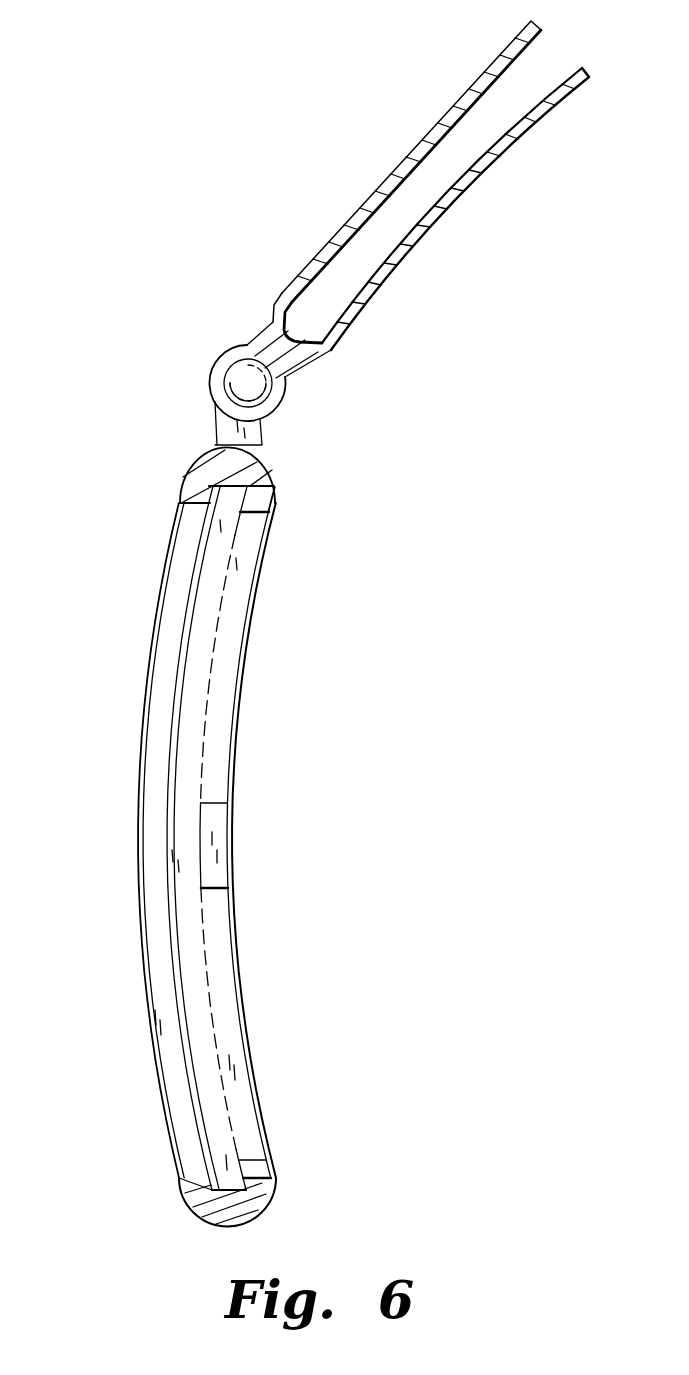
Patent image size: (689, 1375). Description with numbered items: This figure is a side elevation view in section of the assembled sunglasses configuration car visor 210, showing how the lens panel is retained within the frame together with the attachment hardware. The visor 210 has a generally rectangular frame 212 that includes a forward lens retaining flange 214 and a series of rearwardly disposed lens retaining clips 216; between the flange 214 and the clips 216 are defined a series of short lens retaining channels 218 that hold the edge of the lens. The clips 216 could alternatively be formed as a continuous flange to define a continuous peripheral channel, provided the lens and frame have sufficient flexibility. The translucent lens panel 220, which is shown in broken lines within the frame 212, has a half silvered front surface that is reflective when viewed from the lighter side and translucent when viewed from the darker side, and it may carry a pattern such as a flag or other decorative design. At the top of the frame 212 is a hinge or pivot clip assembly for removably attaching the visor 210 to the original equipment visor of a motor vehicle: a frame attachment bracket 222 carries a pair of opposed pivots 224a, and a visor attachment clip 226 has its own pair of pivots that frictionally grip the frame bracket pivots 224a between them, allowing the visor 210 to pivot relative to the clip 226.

The visor 210 is at (544, 963).
The frame 212 is at (185, 1198).
The forward lens retaining flange 214 is at (172, 1085).
The lens retaining clips 216 is at (272, 512).
The lens retaining channels 218 is at (226, 513).
The translucent lens panel 220 is at (182, 770).
The frame attachment bracket 222 is at (216, 444).
The pivots 224a is at (226, 362).
The visor attachment clip 226 is at (437, 125).